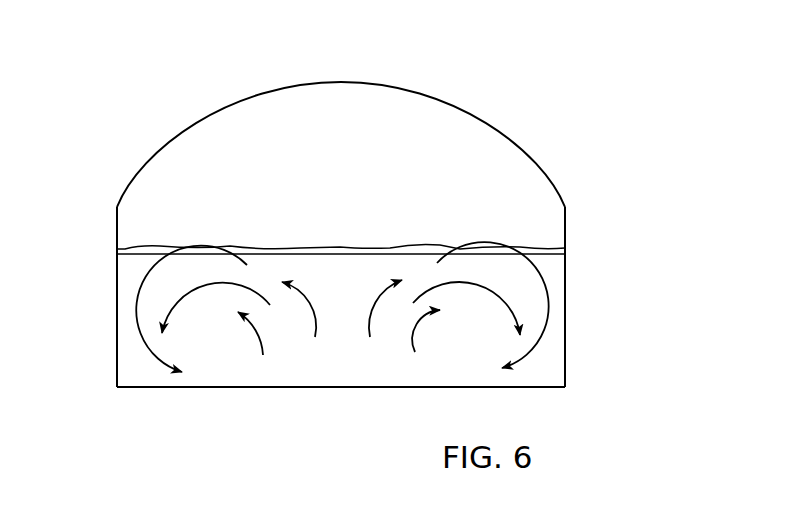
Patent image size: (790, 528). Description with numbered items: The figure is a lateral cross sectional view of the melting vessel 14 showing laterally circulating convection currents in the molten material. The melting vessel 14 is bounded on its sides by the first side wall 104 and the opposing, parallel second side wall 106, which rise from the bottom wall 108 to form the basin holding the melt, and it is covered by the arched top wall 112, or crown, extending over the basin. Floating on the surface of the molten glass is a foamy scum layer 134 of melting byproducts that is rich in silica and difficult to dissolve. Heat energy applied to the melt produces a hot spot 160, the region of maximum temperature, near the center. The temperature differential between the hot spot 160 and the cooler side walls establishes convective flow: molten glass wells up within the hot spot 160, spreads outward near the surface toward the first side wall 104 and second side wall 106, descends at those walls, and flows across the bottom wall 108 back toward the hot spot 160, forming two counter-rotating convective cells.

The melting vessel 14 is at (118, 151).
The top wall 112 is at (403, 87).
The first side wall 104 is at (117, 308).
The second side wall 106 is at (565, 312).
The bottom wall 108 is at (335, 387).
The scum layer 134 is at (447, 243).
The hot spot 160 is at (371, 297).